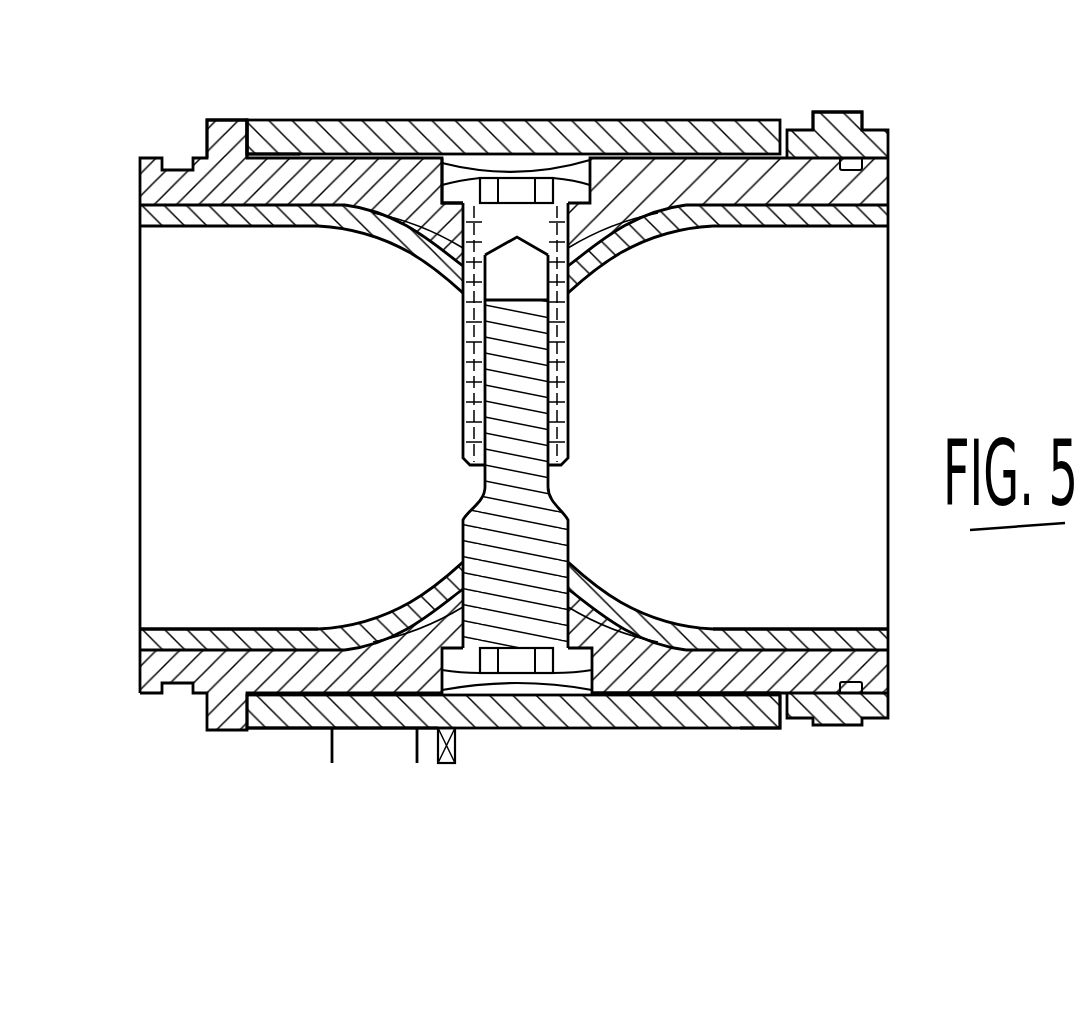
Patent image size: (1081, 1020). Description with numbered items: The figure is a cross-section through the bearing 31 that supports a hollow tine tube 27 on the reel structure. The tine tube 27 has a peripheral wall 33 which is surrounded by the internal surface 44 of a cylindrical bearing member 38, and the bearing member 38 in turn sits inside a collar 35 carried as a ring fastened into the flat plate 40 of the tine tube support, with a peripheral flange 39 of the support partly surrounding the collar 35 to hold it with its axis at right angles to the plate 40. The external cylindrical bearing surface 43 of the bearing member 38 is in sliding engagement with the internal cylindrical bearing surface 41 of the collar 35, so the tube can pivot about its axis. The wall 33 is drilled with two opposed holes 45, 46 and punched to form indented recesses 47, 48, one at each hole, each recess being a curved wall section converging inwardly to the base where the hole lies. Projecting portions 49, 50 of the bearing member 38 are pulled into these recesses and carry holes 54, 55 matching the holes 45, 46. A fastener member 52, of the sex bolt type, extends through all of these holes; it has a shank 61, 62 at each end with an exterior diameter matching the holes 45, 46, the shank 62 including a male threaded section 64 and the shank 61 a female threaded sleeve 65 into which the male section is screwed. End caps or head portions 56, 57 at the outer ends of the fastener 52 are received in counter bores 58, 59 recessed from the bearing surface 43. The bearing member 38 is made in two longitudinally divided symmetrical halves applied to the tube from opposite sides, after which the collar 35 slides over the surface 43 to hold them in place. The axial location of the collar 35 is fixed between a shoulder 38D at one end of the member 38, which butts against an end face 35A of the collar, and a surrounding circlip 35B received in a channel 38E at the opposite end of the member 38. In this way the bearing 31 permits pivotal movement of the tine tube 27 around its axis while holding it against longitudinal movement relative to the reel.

The tine tube 27 is at (294, 611).
The bearing 31 is at (453, 755).
The peripheral wall 33 is at (202, 642).
The collar 35 is at (683, 712).
The end face 35A is at (268, 123).
The circlip 35B is at (895, 52).
The cylindrical bearing member 38 is at (683, 665).
The shoulder 38D is at (297, 48).
The channel 38E is at (888, 668).
The peripheral flange 39 is at (350, 747).
The plate 40 is at (438, 760).
The internal cylindrical bearing surface 41 is at (684, 655).
The external cylindrical bearing surface 43 is at (763, 730).
The internal surface 44 is at (855, 597).
The transverse hole 45 is at (577, 558).
The transverse hole 46 is at (573, 297).
The indented recess 47 is at (398, 605).
The indented recess 48 is at (417, 257).
The projecting portion 49 is at (605, 610).
The projecting portion 50 is at (613, 243).
The fastener member 52 is at (599, 441).
The hole 54 is at (443, 593).
The hole 55 is at (440, 250).
The end cap 56 is at (503, 80).
The end cap 57 is at (583, 693).
The counter bore 58 is at (392, 728).
The counter bore 59 is at (633, 160).
The shank 61 is at (573, 336).
The shank 62 is at (570, 533).
The male threaded section 64 is at (527, 427).
The female threaded sleeve 65 is at (463, 418).